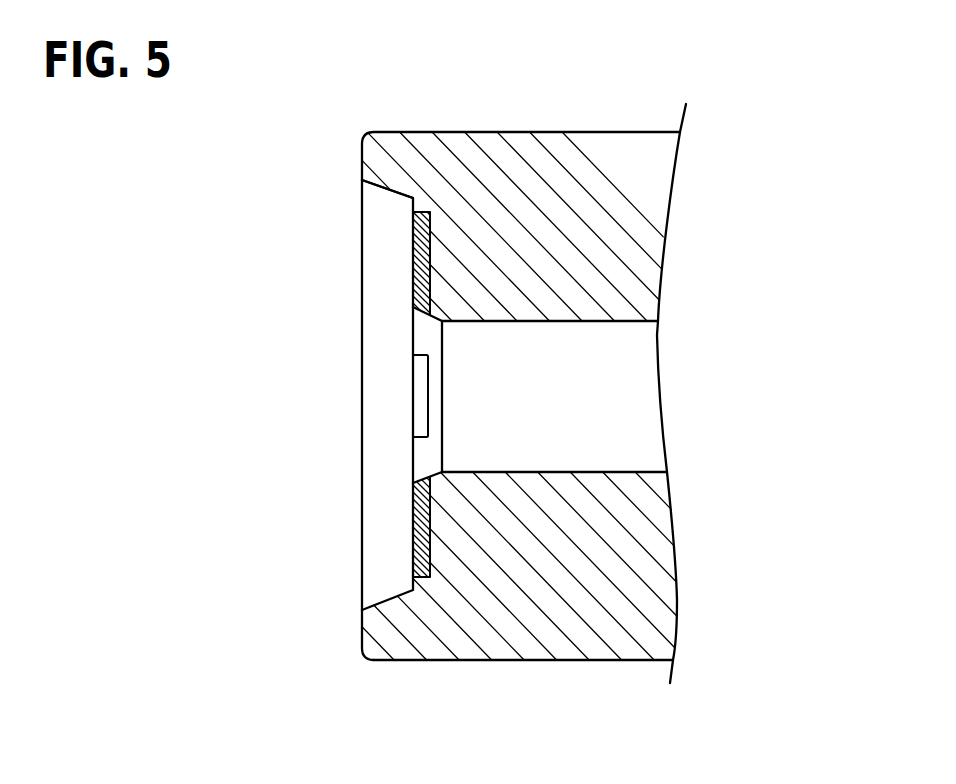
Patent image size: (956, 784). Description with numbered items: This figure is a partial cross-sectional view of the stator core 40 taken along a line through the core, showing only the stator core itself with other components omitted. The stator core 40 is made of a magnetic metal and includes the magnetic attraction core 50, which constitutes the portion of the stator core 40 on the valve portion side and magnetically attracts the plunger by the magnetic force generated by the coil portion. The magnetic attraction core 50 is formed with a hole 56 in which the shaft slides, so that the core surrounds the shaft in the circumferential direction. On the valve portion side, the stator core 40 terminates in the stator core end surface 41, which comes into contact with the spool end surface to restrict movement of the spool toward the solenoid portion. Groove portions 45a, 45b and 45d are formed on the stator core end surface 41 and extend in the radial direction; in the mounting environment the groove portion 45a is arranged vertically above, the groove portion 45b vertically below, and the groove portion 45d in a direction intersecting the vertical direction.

The stator core 40 is at (305, 138).
The stator core end surface 41 is at (412, 282).
The groove portion 45a is at (412, 228).
The groove portion 45b is at (418, 532).
The groove portion 45d is at (418, 393).
The magnetic attraction core 50 is at (633, 239).
The hole 56 is at (605, 322).